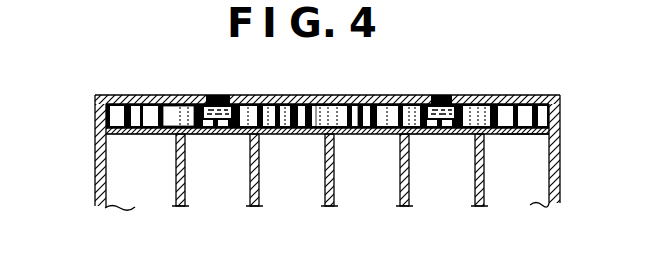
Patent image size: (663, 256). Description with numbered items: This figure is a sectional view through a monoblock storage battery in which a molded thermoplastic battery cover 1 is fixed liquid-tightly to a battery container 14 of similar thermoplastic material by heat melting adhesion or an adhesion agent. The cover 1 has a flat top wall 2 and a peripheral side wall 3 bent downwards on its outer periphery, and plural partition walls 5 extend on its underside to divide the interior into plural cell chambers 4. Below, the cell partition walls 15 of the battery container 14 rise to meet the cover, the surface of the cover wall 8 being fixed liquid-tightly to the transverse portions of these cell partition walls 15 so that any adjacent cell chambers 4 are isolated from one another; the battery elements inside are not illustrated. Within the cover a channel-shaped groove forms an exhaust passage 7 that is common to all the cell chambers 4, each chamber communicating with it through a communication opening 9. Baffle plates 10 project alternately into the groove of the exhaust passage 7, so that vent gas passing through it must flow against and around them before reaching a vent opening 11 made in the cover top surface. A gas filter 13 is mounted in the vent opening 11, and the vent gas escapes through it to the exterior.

The battery cover 1 is at (325, 128).
The flat top wall 2 is at (521, 96).
The peripheral side wall 3 is at (561, 108).
The cell chamber 4 is at (129, 194).
The partition wall 5 is at (181, 96).
The exhaust passage 7 is at (320, 96).
The cover wall 8 is at (367, 135).
The communication opening 9 is at (516, 135).
The baffle plate 10 is at (359, 96).
The vent opening 11 is at (214, 96).
The gas filter 13 is at (228, 96).
The battery container 14 is at (95, 184).
The cell partition wall 15 is at (176, 187).